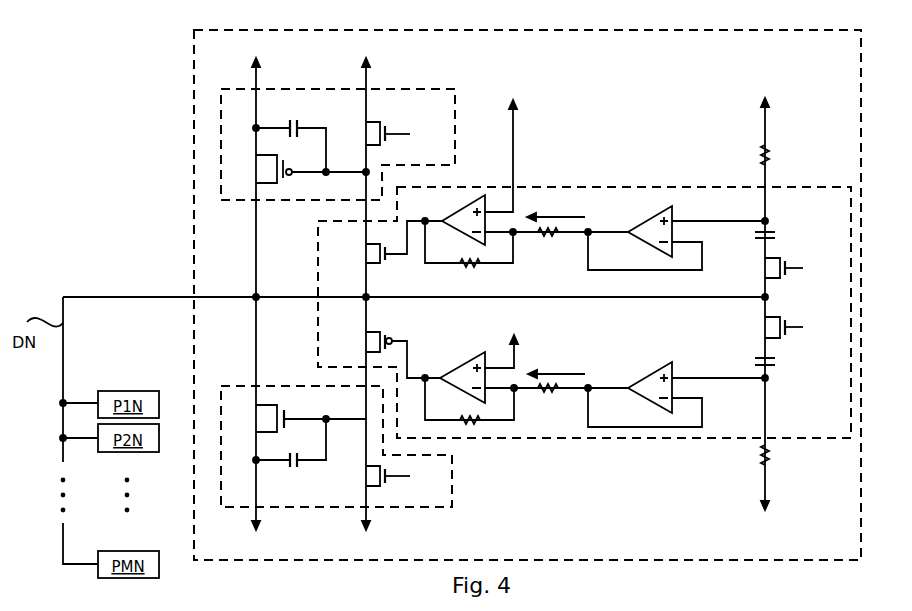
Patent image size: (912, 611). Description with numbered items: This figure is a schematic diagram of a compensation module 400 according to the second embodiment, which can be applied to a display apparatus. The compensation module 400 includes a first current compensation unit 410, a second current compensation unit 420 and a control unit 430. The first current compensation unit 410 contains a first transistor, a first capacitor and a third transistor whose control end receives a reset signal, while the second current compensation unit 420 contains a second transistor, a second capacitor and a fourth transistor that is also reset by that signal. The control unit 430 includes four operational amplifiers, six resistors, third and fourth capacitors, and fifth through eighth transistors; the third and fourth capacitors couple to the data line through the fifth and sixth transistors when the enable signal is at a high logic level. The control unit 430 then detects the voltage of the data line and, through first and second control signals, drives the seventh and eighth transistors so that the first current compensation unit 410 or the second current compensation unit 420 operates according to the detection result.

The compensation module 400 is at (173, 120).
The first current compensation unit 410 is at (423, 89).
The second current compensation unit 420 is at (452, 481).
The control unit 430 is at (620, 438).